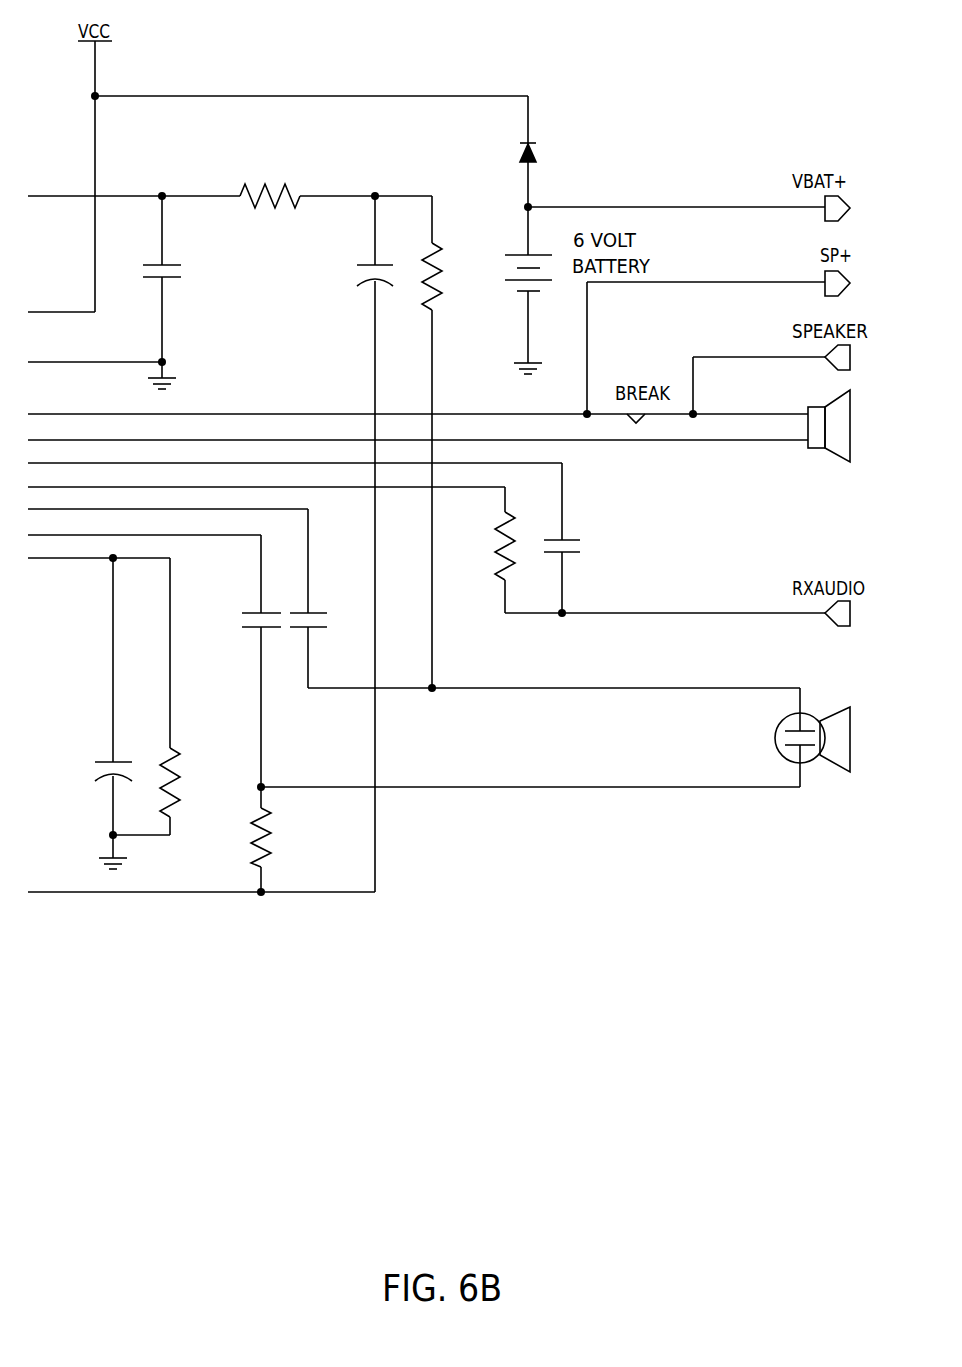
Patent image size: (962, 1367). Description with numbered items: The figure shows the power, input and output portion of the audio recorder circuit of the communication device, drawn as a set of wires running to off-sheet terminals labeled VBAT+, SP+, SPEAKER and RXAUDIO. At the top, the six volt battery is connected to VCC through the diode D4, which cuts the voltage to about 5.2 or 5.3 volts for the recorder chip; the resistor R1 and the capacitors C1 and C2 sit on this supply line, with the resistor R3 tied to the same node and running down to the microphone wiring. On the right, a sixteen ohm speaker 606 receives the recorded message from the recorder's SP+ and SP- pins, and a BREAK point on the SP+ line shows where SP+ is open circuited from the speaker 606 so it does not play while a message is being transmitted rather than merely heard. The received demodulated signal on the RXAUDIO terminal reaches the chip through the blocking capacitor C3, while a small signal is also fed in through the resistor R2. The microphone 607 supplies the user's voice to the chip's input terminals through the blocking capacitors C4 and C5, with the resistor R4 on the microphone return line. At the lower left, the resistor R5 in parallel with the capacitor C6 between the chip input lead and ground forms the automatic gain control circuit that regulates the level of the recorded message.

The speaker 606 is at (851, 438).
The microphone 607 is at (851, 718).
The diode D4 is at (553, 151).
The resistor R1 is at (272, 185).
The resistor R2 is at (484, 550).
The resistor R3 is at (458, 442).
The resistor R4 is at (282, 839).
The resistor R5 is at (195, 696).
The capacitor C1 is at (356, 544).
The capacitor C2 is at (179, 287).
The blocking capacitor C3 is at (580, 538).
The blocking capacitor C4 is at (326, 598).
The blocking capacitor C5 is at (247, 661).
The capacitor C6 is at (98, 708).